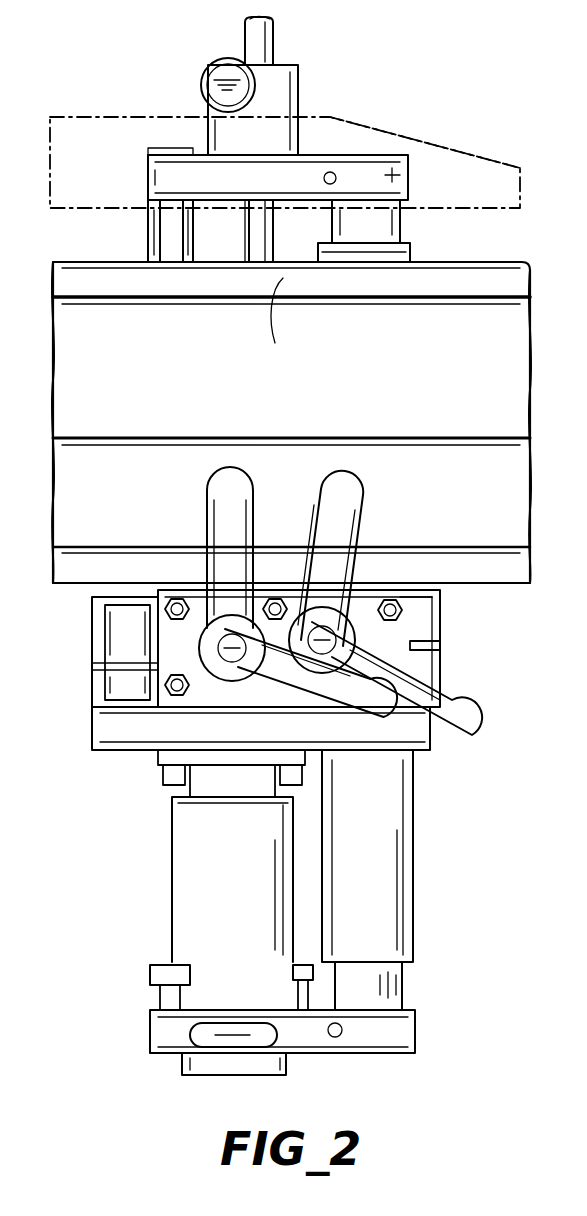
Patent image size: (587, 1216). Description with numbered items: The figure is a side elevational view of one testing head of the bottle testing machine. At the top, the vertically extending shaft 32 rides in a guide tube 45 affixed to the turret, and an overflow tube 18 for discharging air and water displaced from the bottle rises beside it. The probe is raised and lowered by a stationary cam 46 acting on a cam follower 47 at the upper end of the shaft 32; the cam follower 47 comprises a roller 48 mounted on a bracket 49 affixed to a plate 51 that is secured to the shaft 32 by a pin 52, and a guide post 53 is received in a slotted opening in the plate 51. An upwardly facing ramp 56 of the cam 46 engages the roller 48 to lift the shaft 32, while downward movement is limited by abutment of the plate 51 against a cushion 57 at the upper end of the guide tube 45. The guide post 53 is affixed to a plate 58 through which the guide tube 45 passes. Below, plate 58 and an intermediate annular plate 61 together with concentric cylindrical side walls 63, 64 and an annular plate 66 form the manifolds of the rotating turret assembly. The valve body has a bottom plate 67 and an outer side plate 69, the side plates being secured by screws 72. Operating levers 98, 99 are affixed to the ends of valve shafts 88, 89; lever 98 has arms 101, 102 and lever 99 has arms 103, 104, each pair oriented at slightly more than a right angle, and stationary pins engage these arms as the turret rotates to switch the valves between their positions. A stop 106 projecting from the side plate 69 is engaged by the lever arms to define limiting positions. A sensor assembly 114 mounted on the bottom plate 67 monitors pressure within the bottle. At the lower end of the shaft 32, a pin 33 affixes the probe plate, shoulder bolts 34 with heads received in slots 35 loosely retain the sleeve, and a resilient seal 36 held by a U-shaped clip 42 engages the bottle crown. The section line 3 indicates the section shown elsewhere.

The section line 3- 3 is at (140, 568).
The overflow tube 18 is at (258, 45).
The shaft 32 is at (462, 1001).
The pin 33 is at (342, 1032).
The shoulder bolts 34 is at (152, 975).
The slots 35 is at (170, 968).
The seal 36 is at (182, 1065).
The U-shaped clip 42 is at (190, 1035).
The guide tube 45 is at (420, 262).
The cam 46 is at (375, 135).
The cam follower 47 is at (263, 82).
The roller 48 is at (230, 88).
The bracket 49 is at (277, 100).
The plate 51 is at (398, 178).
The pin 52 is at (322, 178).
The guide post 53 is at (168, 225).
The ramp 56 is at (485, 150).
The cushion 57 is at (412, 253).
The plate 58 is at (277, 323).
The intermediate annular plate 61 is at (462, 565).
The cylindrical side wall 63 is at (114, 370).
The cylindrical side wall 64 is at (120, 521).
The annular plate 66 is at (312, 437).
The bottom plate 67 is at (178, 752).
The outer side plate 69 is at (417, 603).
The screws 72 is at (173, 690).
The valve shaft 88 is at (232, 655).
The valve shaft 89 is at (322, 655).
The operating lever 98 is at (232, 606).
The operating lever 99 is at (328, 606).
The lever arm 101 is at (228, 490).
The lever arm 102 is at (392, 705).
The lever arm 103 is at (347, 492).
The lever arm 104 is at (470, 722).
The stop 106 is at (440, 646).
The sensor assembly 114 is at (97, 657).